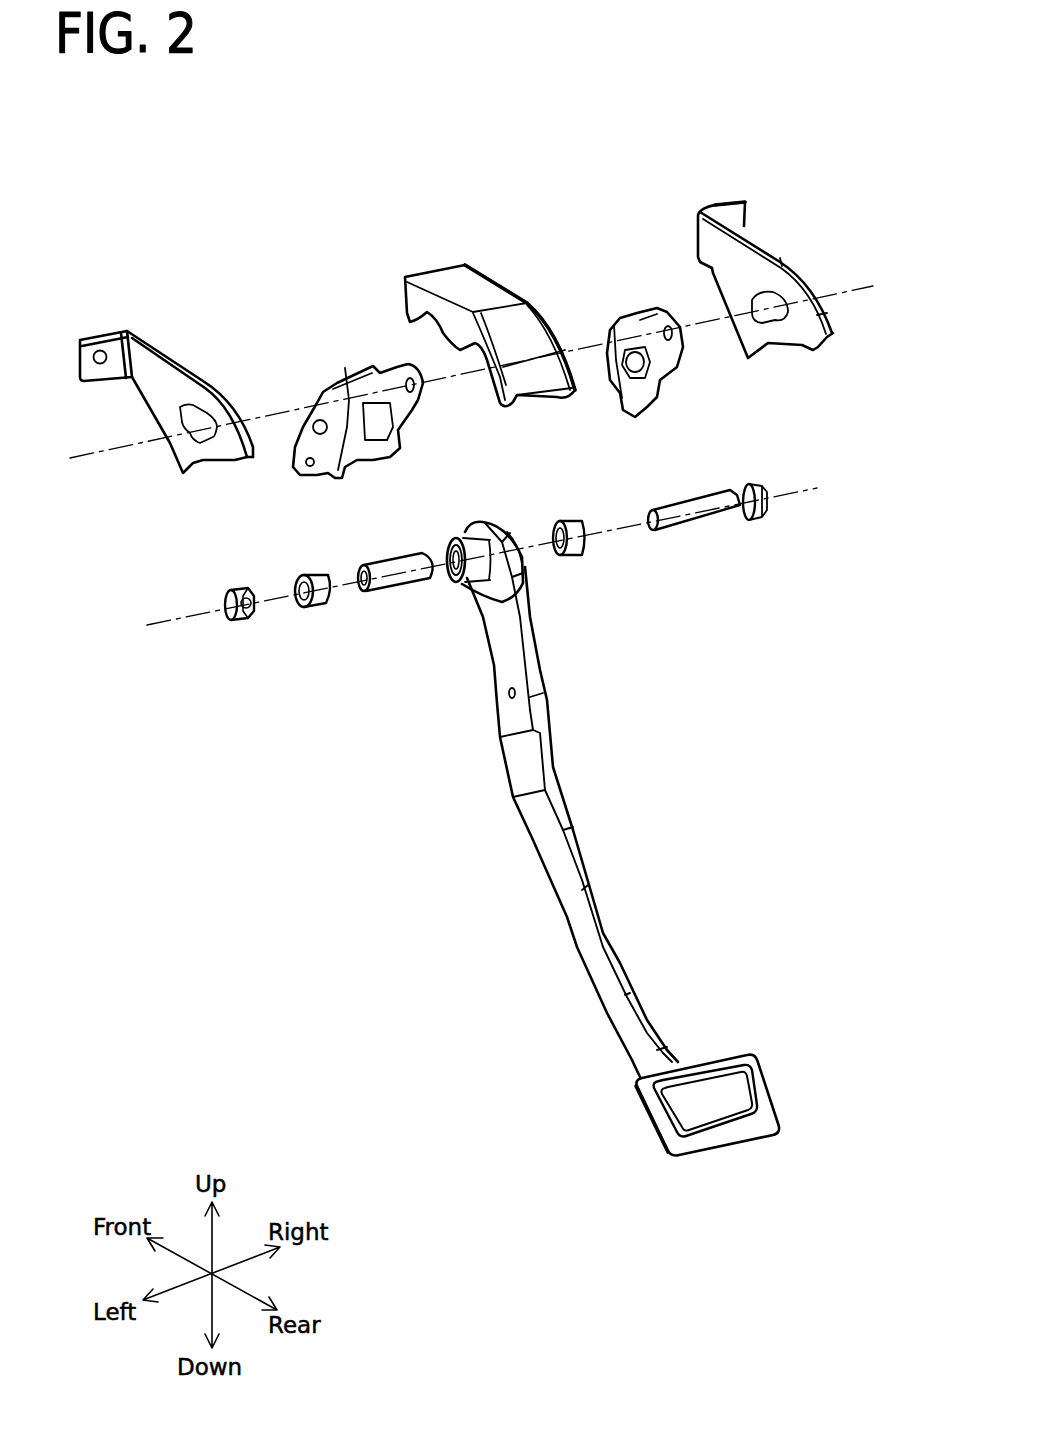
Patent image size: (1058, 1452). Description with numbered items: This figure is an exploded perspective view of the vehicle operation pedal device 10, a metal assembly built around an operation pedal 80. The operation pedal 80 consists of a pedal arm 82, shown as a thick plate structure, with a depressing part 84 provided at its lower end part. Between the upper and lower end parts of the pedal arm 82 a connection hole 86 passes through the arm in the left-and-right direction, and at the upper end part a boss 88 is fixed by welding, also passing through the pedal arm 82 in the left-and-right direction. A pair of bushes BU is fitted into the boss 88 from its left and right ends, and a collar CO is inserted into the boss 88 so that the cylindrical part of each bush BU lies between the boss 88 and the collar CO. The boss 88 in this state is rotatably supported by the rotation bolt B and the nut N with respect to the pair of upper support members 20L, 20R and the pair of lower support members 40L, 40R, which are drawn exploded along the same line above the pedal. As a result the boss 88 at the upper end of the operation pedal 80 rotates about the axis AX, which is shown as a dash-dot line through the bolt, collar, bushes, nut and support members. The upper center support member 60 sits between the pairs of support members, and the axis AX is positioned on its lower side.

The vehicle operation pedal device 10 is at (541, 98).
The upper support member 20L is at (99, 320).
The upper support member 20R is at (724, 186).
The lower support member 40L is at (330, 364).
The lower support member 40R is at (634, 300).
The upper center support member 60 is at (446, 261).
The operation pedal 80 is at (600, 895).
The pedal arm 82 is at (573, 857).
The depressing part 84 is at (717, 1107).
The connection hole 86 is at (503, 703).
The boss 88 is at (478, 583).
The axis AX is at (862, 290).
The rotation bolt B is at (763, 515).
The bush BU is at (322, 610).
The collar CO is at (402, 577).
The nut N is at (245, 620).